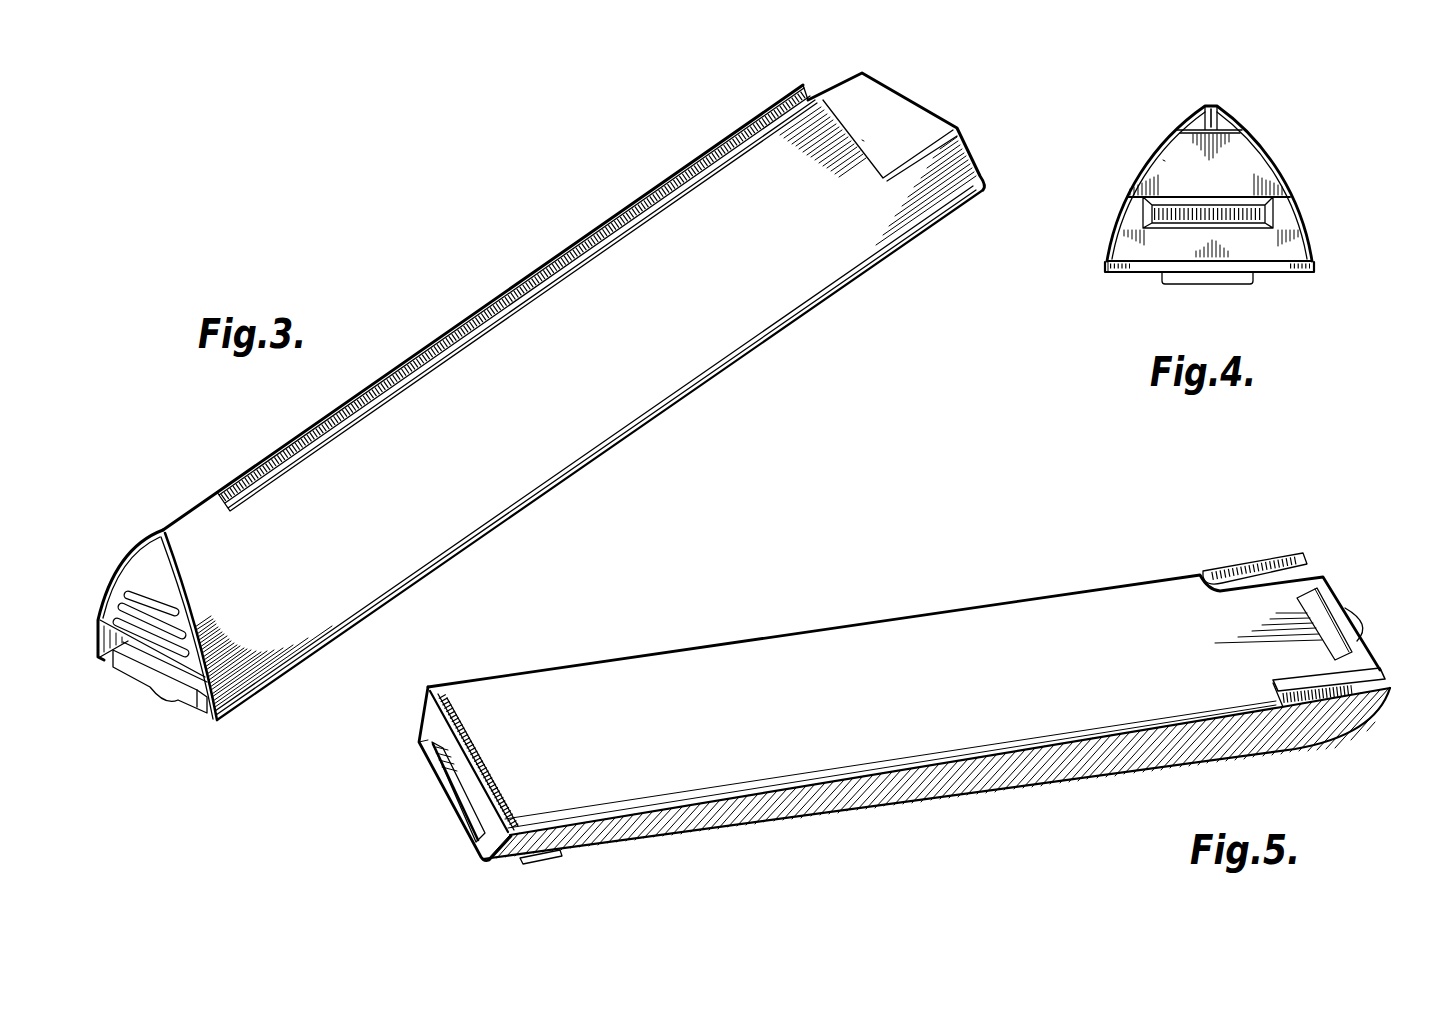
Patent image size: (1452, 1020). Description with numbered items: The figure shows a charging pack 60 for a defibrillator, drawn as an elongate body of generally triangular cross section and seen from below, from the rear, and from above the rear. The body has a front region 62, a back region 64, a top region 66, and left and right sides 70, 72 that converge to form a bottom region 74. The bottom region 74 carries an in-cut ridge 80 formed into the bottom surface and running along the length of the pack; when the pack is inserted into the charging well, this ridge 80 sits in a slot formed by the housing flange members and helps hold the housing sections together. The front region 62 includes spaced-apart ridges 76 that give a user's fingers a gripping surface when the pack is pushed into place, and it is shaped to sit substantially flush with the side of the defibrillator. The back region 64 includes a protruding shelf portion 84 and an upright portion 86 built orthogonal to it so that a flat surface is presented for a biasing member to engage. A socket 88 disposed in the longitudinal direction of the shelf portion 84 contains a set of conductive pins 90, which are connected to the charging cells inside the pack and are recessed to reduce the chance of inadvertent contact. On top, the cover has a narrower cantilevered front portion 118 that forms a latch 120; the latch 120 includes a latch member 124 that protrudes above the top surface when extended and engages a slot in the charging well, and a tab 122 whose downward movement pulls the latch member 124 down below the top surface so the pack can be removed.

In FIG. 3, the charging pack 60 is at (447, 327).
In FIG. 4, the charging pack 60 is at (1300, 147).
In FIG. 5, the charging pack 60 is at (997, 552).
In FIG. 3, the front region 62 is at (108, 555).
In FIG. 5, the front region 62 is at (1250, 544).
In FIG. 3, the back region 64 is at (1002, 122).
In FIG. 5, the back region 64 is at (433, 813).
In FIG. 3, the top region 66 is at (712, 386).
In FIG. 4, the top region 66 is at (1130, 274).
In FIG. 5, the top region 66 is at (718, 638).
In FIG. 4, the left side 70 is at (1258, 143).
In FIG. 4, the right side 72 is at (1147, 217).
In FIG. 5, the right side 72 is at (925, 793).
In FIG. 3, the bottom region 74 is at (183, 503).
In FIG. 4, the bottom region 74 is at (1213, 103).
In FIG. 3, the ridges 76 is at (143, 637).
In FIG. 3, the in-cut ridge 80 is at (560, 244).
In FIG. 4, the in-cut ridge 80 is at (1220, 115).
In FIG. 3, the shelf portion 84 is at (862, 95).
In FIG. 4, the shelf portion 84 is at (1295, 248).
In FIG. 5, the shelf portion 84 is at (426, 723).
In FIG. 3, the upright portion 86 is at (862, 140).
In FIG. 4, the upright portion 86 is at (1163, 160).
In FIG. 4, the socket 88 is at (1264, 208).
In FIG. 5, the socket 88 is at (437, 765).
In FIG. 4, the conductive pins 90 is at (1125, 212).
In FIG. 5, the front portion 118 is at (1253, 597).
In FIG. 3, the latch 120 is at (141, 702).
In FIG. 5, the latch 120 is at (1352, 594).
In FIG. 5, the tab 122 is at (1358, 628).
In FIG. 5, the latch member 124 is at (1313, 602).